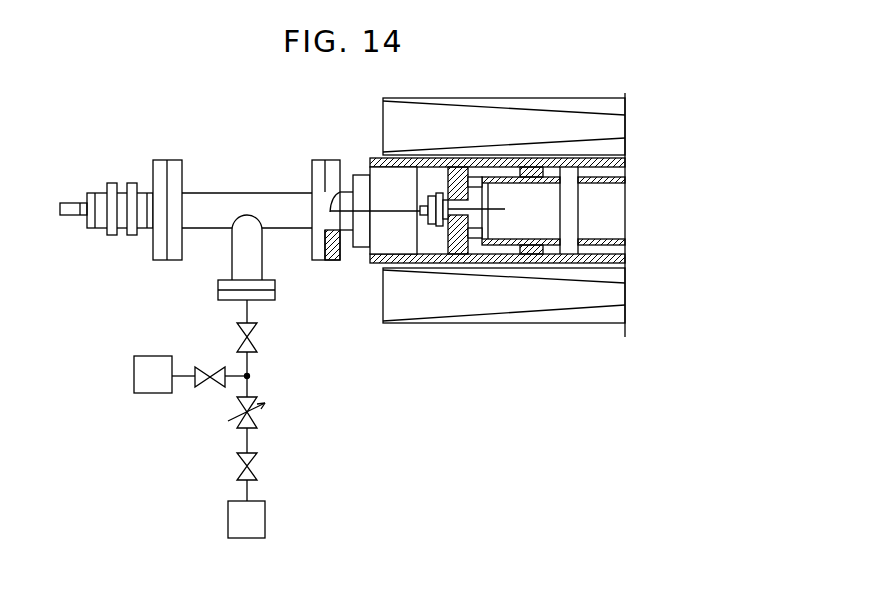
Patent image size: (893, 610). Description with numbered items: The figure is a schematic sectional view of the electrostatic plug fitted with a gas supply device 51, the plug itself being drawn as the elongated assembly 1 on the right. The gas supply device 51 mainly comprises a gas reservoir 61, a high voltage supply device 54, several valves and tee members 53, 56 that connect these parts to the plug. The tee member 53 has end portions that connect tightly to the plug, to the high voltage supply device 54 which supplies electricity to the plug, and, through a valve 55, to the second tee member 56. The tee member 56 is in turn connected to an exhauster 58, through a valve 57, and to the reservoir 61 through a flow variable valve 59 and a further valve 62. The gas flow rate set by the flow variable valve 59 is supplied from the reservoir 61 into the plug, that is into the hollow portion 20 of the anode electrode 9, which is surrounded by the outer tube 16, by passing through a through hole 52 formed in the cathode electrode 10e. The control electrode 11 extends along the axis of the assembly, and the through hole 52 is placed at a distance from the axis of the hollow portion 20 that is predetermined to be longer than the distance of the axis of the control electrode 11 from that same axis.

The plasma processing apparatus 1 is at (562, 325).
The anode electrode 9 is at (505, 185).
The cathode electrode 10e is at (473, 175).
The control electrode 11 is at (493, 211).
The outer tube 16 is at (618, 176).
The hollow portion 20 is at (555, 240).
The gas supply device 51 is at (402, 477).
The through hole 52 is at (480, 240).
The tee member 53 is at (232, 190).
The high voltage supply device 54 is at (140, 168).
The valve 55 is at (257, 343).
The tee member 56 is at (252, 376).
The valve 57 is at (205, 388).
The exhauster 58 is at (150, 394).
The flow variable valve 59 is at (257, 418).
The gas reservoir 61 is at (265, 514).
The valve 62 is at (257, 468).